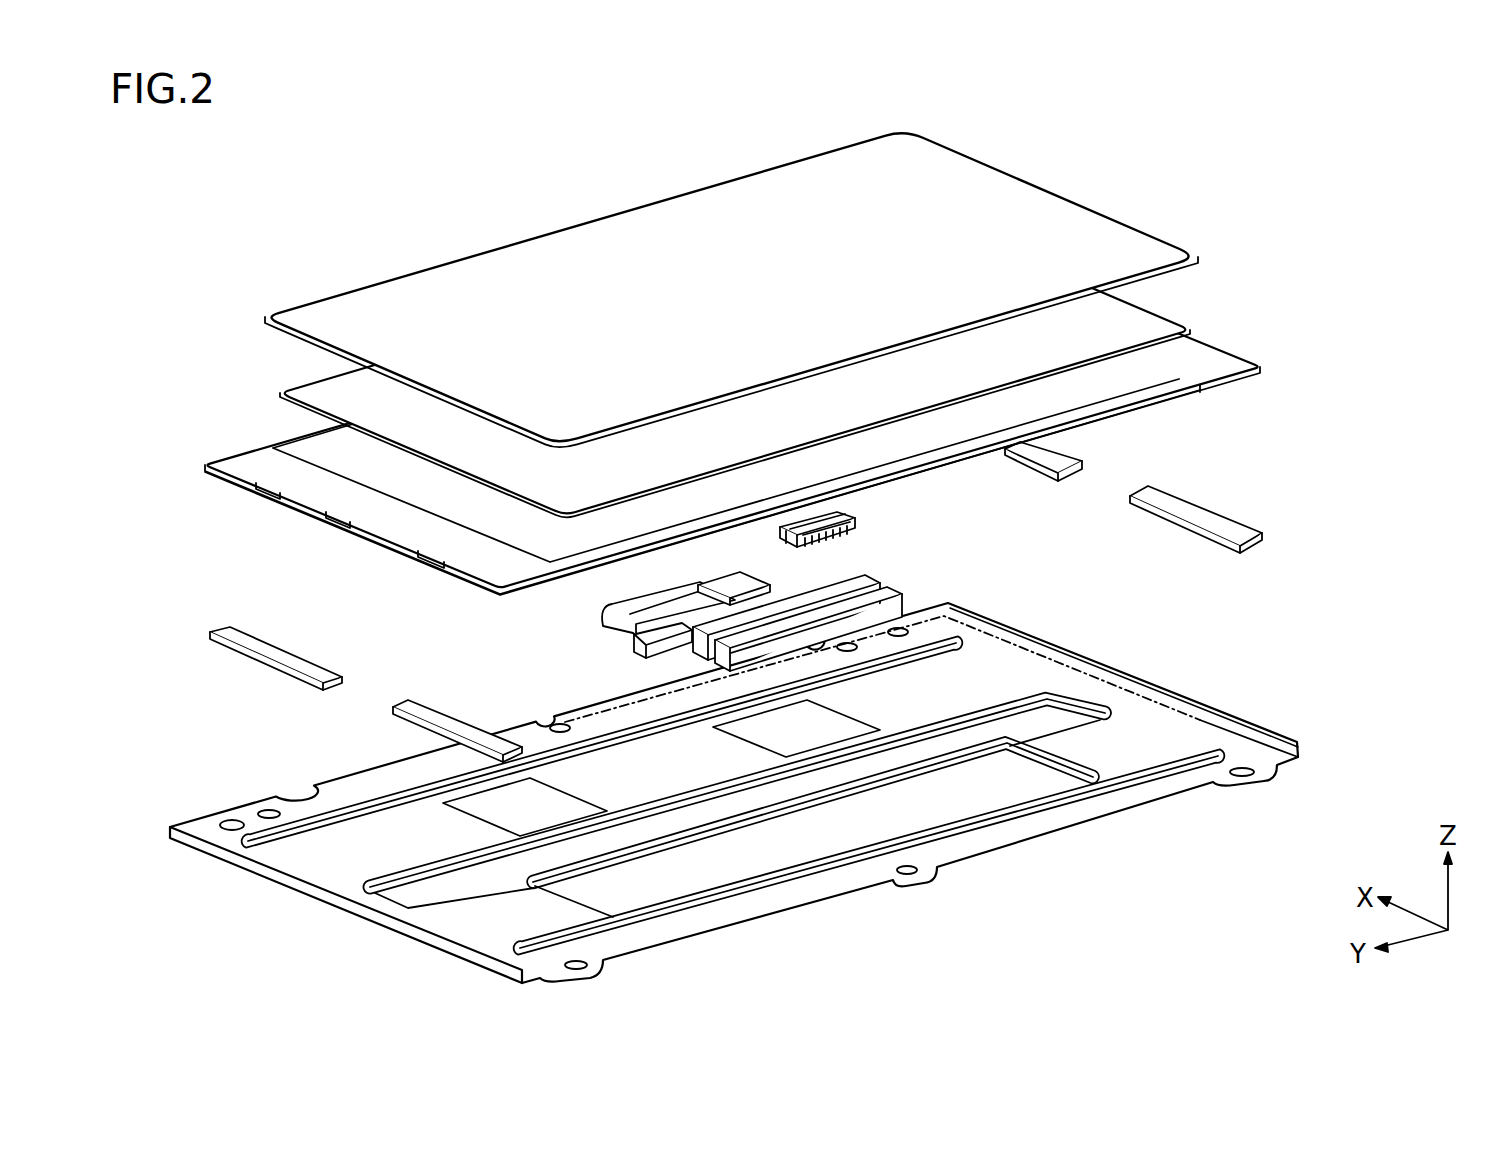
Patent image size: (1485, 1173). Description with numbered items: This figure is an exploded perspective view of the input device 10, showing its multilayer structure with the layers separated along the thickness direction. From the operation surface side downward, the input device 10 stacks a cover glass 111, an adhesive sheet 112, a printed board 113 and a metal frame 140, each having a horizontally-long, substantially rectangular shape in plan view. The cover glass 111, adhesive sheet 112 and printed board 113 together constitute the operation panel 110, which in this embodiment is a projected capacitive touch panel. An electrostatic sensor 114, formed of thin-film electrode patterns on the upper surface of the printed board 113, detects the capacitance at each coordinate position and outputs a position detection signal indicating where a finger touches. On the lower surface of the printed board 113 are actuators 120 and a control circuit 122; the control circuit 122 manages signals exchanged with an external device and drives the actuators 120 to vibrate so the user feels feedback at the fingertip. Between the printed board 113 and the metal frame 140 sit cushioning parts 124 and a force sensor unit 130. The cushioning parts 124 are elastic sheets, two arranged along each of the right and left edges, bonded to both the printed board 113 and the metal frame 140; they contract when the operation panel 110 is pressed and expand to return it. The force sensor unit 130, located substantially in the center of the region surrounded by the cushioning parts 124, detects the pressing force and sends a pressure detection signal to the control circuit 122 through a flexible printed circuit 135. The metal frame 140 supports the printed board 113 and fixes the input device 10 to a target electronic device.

The input device 10 is at (1330, 113).
The operation panel 110 is at (829, 364).
The cover glass 111 is at (1383, 413).
The adhesive sheet 112 is at (1193, 330).
The printed board 113 is at (1259, 369).
The electrostatic sensor 114 is at (1200, 376).
The actuators 120 is at (905, 565).
The control circuit 122 is at (855, 518).
The cushioning parts 124 is at (1068, 451).
The force sensor unit 130 is at (743, 580).
The flexible printed circuit 135 is at (602, 622).
The metal frame 140 is at (1300, 742).